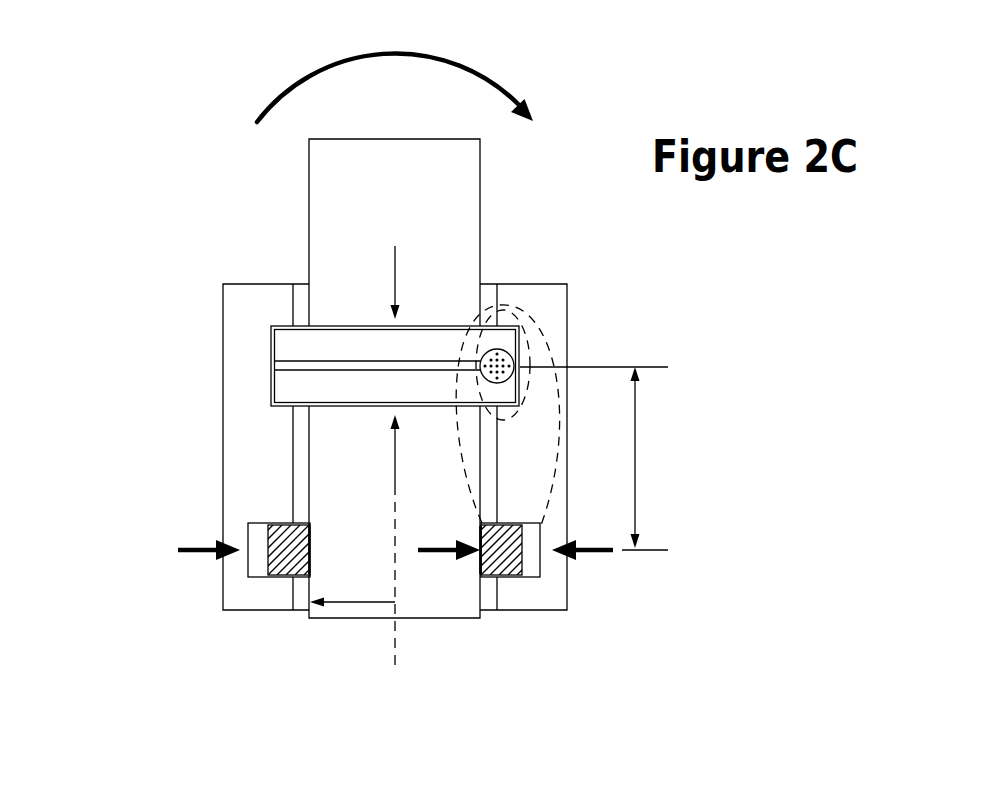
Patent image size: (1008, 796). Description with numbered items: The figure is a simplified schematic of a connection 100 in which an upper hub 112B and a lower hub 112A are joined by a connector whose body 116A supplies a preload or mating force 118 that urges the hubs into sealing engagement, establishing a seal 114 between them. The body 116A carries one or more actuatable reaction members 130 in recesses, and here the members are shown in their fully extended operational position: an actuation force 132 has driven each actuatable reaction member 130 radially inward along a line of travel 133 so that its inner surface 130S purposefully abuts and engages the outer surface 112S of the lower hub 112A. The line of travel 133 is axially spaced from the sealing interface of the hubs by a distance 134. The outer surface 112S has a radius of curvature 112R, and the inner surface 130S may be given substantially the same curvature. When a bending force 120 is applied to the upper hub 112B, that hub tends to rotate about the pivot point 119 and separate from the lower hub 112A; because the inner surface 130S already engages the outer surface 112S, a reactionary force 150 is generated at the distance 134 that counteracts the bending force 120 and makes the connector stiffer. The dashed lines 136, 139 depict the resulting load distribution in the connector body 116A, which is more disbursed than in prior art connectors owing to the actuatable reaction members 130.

The connection 100 is at (147, 179).
The bending force 120 is at (460, 63).
The upper hub 112B is at (327, 233).
The mating force 118 is at (397, 258).
The body 116A is at (232, 320).
The seal 114 is at (434, 354).
The pivot point 119 is at (499, 358).
The dashed lines 136 is at (550, 342).
The dashed lines 139 is at (530, 382).
The lower hub 112A is at (323, 455).
The distance 134 is at (637, 453).
The actuation force 132 is at (182, 550).
The line of travel 133 is at (662, 548).
The outer surface 112S is at (308, 585).
The actuatable reaction member 130 is at (520, 555).
The inner surface 130S is at (497, 555).
The reactionary force 150 is at (443, 552).
The radius of curvature 112R is at (352, 602).